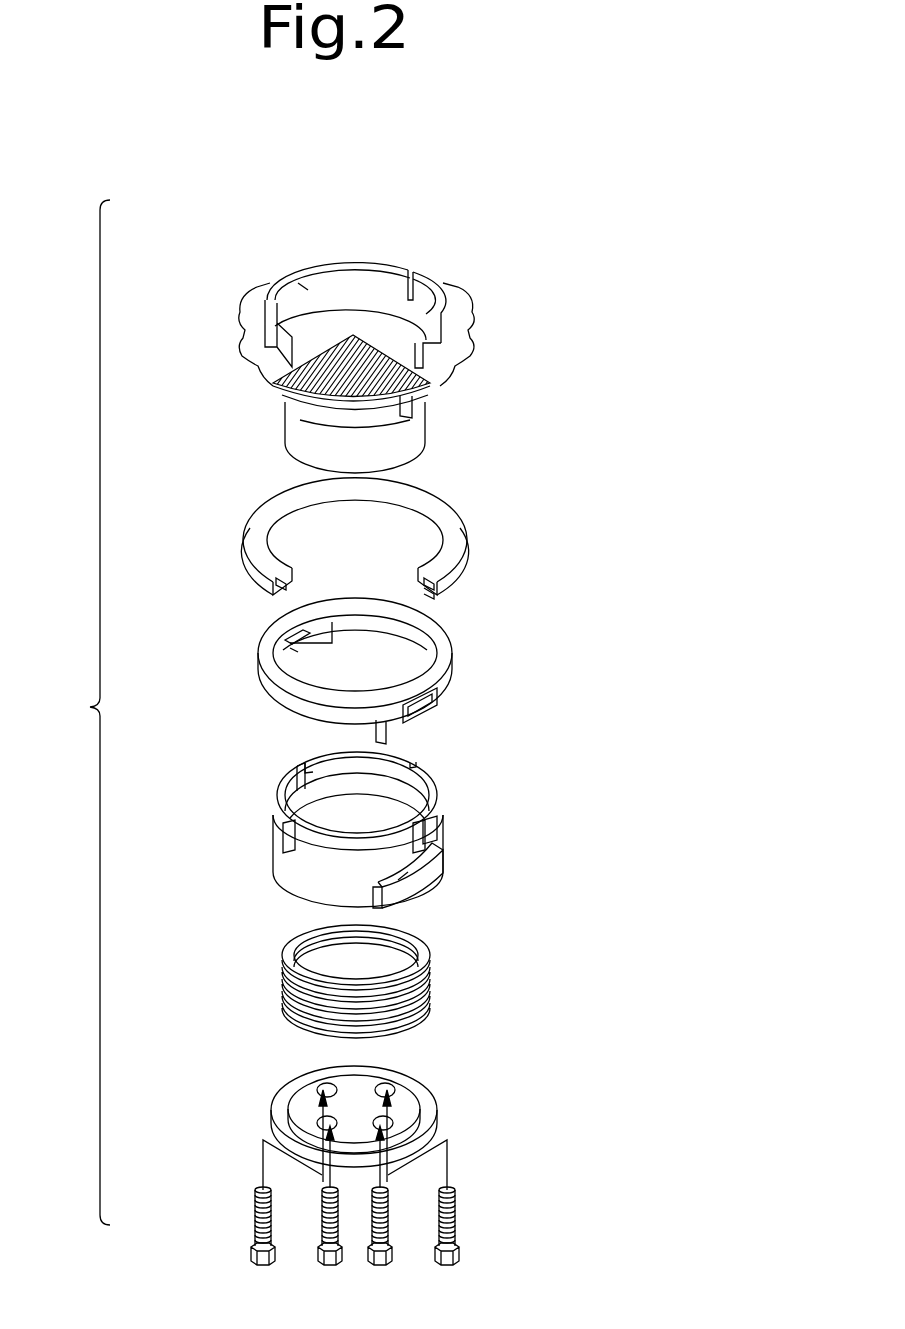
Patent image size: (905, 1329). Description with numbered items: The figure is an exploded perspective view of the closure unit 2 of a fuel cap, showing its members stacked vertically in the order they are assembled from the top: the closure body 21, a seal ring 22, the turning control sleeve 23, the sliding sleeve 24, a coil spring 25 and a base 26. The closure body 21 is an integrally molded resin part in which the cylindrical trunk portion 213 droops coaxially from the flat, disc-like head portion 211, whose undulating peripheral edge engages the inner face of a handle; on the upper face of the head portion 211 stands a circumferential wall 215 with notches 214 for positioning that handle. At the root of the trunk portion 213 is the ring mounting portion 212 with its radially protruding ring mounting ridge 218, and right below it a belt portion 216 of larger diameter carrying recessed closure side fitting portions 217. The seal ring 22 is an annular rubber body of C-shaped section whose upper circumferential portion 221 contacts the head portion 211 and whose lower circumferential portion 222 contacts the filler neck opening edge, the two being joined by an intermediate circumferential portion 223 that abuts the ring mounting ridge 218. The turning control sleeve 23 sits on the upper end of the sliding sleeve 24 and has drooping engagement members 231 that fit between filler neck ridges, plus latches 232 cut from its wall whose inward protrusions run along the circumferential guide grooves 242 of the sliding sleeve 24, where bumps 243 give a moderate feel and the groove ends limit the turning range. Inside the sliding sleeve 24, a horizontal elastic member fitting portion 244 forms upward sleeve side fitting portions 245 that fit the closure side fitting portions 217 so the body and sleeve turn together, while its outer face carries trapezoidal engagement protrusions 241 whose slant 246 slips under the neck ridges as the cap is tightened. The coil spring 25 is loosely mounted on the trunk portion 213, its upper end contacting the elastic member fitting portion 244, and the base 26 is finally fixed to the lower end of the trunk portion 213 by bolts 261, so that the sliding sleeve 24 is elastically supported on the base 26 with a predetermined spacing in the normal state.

The closure unit 2 is at (308, 732).
The closure body 21 is at (353, 346).
The head portion 211 is at (256, 322).
The ring mounting portion 212 is at (290, 408).
The trunk portion 213 is at (397, 448).
The notches 214 is at (414, 280).
The circumferential wall 215 is at (303, 288).
The belt portion 216 is at (322, 420).
The closure side fitting portions 217 is at (403, 412).
The ring mounting ridge 218 is at (393, 404).
The seal ring 22 is at (356, 561).
The upper circumferential portion 221 is at (433, 583).
The lower circumferential portion 222 is at (434, 598).
The intermediate circumferential portion 223 is at (353, 562).
The turning control sleeve 23 is at (353, 672).
The engagement members 231 is at (297, 650).
The latches 232 is at (300, 627).
The sliding sleeve 24 is at (353, 845).
The engagement protrusions 241 is at (433, 879).
The guide grooves 242 is at (275, 792).
The bumps 243 is at (287, 837).
The elastic member fitting portion 244 is at (420, 793).
The sleeve side fitting portions 245 is at (300, 767).
The slant 246 is at (398, 880).
The coil spring 25 is at (282, 980).
The base 26 is at (276, 1107).
The bolts 261 is at (322, 1220).